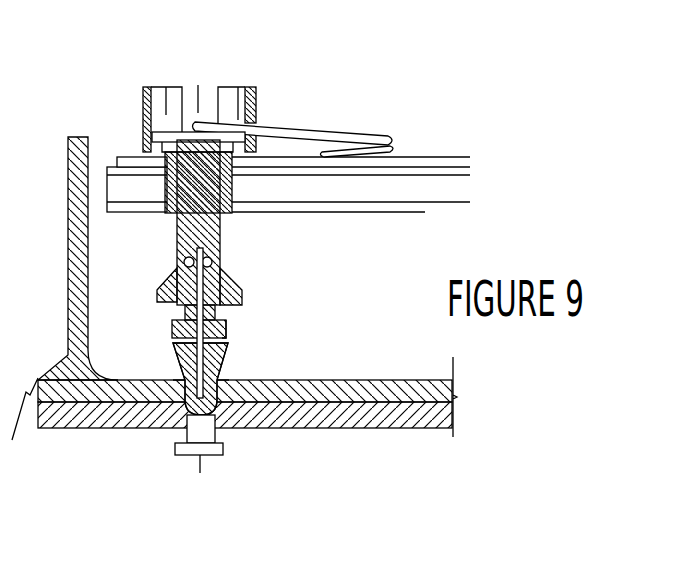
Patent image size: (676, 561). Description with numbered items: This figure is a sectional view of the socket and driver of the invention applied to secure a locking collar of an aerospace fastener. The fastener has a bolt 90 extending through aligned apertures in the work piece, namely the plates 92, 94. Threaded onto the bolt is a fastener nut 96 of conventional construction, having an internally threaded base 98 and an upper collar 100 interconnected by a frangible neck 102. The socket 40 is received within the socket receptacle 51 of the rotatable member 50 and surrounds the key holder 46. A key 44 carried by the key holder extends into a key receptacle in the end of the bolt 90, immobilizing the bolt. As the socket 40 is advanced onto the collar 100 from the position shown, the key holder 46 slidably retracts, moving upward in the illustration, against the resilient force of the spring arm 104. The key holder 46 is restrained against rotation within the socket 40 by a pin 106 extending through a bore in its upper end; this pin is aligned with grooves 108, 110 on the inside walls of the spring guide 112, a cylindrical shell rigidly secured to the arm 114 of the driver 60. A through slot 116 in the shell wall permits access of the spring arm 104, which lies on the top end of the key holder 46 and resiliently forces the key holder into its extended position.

The socket 40 is at (177, 272).
The key 44 is at (203, 355).
The key holder 46 is at (225, 243).
The rotatable member 50 is at (148, 167).
The socket receptacle 51 is at (230, 205).
The driver 60 is at (437, 203).
The bolt 90 is at (192, 428).
The plate 92 is at (355, 388).
The plate 94 is at (370, 425).
The fastener nut 96 is at (230, 335).
The internally threaded base 98 is at (175, 370).
The upper collar 100 is at (178, 326).
The frangible neck 102 is at (222, 345).
The spring arm 104 is at (272, 125).
The pin 106 is at (152, 128).
The groove 108 is at (243, 97).
The groove 110 is at (157, 97).
The spring guide 112 is at (257, 87).
The arm 114 is at (415, 158).
The through slot 116 is at (213, 97).